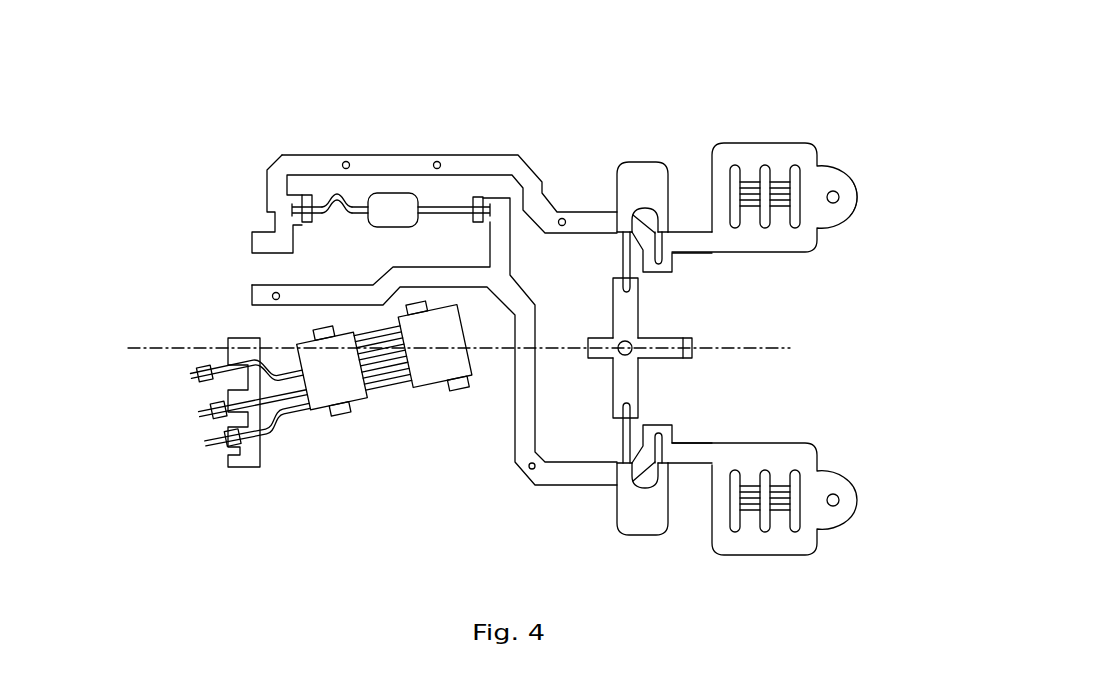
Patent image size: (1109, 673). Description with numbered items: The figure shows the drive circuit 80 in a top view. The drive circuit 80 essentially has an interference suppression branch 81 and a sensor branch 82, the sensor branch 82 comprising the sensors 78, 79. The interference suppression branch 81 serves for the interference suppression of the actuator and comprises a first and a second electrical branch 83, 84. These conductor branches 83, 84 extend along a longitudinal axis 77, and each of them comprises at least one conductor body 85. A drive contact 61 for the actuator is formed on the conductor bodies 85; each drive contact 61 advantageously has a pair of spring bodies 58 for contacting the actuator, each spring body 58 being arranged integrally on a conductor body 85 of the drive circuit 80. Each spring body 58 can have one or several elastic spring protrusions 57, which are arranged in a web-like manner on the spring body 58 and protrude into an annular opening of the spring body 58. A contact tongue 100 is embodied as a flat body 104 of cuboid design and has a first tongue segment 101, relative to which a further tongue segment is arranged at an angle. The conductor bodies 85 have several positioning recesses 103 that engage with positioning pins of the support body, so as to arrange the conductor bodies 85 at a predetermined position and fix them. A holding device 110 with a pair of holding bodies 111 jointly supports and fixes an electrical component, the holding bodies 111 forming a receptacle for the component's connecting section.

The drive circuit 80 is at (910, 145).
The drive contact 61 is at (757, 148).
The spring body 58 is at (843, 177).
The spring protrusion 57 is at (778, 470).
The positioning recess 103 is at (346, 160).
The first electrical branch 83 is at (502, 165).
The conductor body 85 is at (618, 379).
The holding device 110 is at (322, 190).
The holding body 111 is at (337, 203).
The flat body 104 is at (680, 332).
The longitudinal axis 77 is at (160, 347).
The second electrical branch 84 is at (250, 294).
The sensor 78 is at (345, 388).
The sensor 79 is at (460, 362).
The contact tongue 100 is at (690, 352).
The first tongue segment 101 is at (658, 356).
The interference suppression branch 81 is at (824, 378).
The sensor branch 82 is at (205, 472).